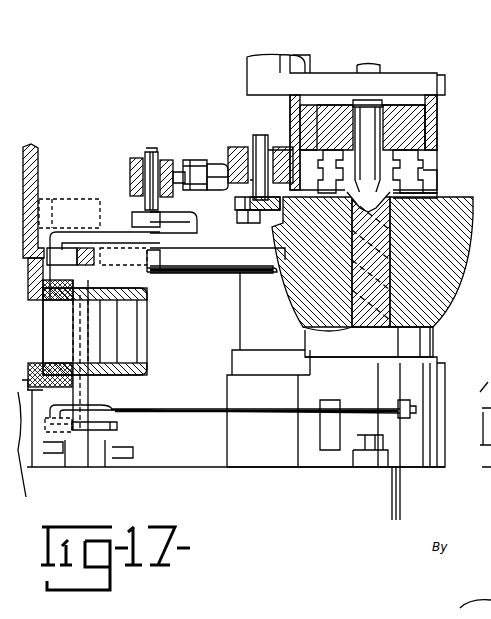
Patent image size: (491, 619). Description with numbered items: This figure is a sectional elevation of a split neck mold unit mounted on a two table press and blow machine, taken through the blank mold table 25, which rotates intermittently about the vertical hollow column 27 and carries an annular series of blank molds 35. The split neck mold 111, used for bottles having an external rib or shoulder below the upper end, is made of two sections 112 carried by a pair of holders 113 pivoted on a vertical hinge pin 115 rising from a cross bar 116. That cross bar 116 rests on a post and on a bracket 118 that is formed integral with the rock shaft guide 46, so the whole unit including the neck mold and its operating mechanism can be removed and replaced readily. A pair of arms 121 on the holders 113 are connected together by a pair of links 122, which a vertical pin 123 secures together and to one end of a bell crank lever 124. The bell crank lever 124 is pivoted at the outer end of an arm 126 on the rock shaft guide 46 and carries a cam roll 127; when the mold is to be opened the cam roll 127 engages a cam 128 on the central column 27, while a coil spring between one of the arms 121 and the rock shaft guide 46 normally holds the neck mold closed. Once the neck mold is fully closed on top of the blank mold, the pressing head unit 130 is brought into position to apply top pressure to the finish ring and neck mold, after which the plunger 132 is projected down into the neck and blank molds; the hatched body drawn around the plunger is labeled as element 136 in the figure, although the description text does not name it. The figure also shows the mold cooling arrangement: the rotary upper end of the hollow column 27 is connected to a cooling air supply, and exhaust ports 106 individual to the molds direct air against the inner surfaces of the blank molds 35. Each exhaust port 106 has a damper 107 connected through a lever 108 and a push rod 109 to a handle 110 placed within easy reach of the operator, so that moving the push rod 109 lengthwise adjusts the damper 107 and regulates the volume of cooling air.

The column 27 is at (38, 150).
The cam 128 is at (61, 199).
The cam roll 127 is at (62, 253).
The bell crank lever 124 is at (116, 236).
The vertical pin 123 is at (146, 150).
The links 122 is at (178, 175).
The arms 121 is at (219, 166).
The vertical hinge pin 115 is at (256, 146).
The cross bar 116 is at (238, 195).
The bracket 118 is at (238, 215).
The arm 126 is at (230, 266).
The pressing head unit 130 is at (420, 80).
The housing body 136 is at (433, 126).
The plunger 132 is at (367, 155).
The holders 113 is at (424, 167).
The split neck mold 111 is at (447, 179).
The sections 112 is at (418, 194).
The blank molds 35 is at (449, 292).
The rock shaft guide 46 is at (249, 318).
The exhaust ports 106 is at (145, 310).
The damper 107 is at (108, 333).
The lever 108 is at (83, 430).
The push rod 109 is at (193, 408).
The handle 110 is at (408, 402).
The blank mold table 25 is at (387, 487).